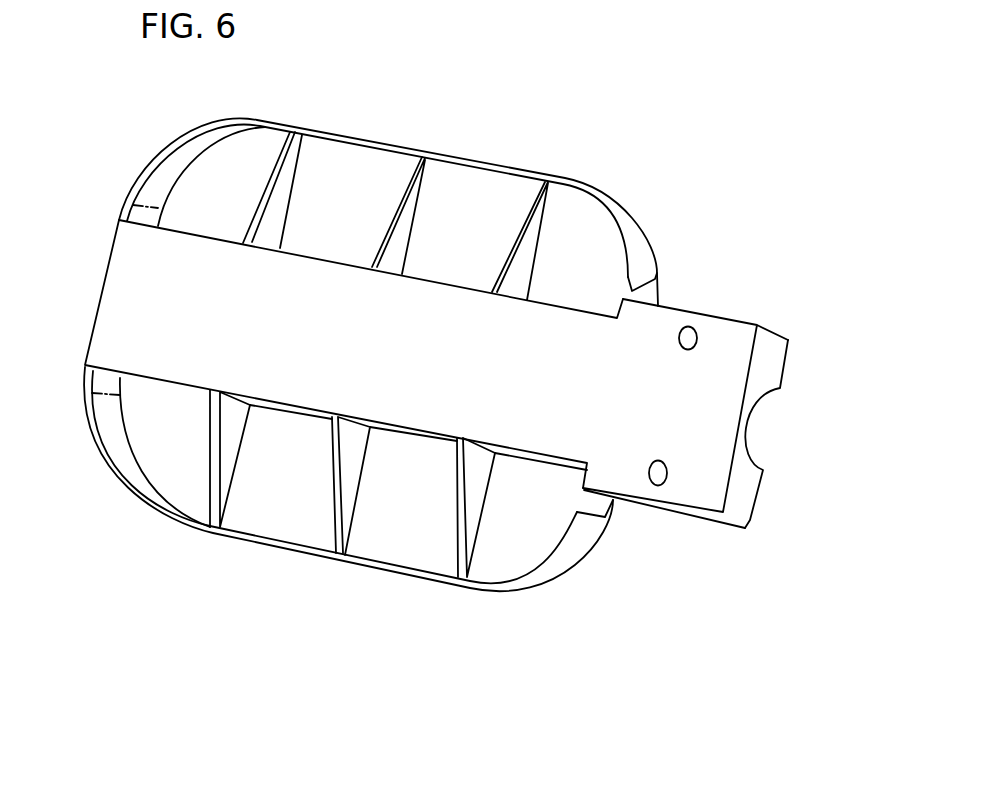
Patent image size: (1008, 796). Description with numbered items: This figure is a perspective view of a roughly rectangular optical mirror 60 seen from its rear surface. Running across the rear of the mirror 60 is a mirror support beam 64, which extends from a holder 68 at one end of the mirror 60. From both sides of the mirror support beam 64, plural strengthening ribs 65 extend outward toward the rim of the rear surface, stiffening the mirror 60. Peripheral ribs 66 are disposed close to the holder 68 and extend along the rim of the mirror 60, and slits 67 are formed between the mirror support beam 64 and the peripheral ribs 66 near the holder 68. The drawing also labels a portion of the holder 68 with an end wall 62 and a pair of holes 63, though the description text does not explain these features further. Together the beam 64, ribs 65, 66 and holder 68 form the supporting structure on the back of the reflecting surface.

The mirror 60 is at (668, 88).
The end wall with notch 62 is at (763, 428).
The mounting holes 63 is at (694, 329).
The mirror support beam 64 is at (140, 295).
The strengthening ribs 65 is at (458, 520).
The peripheral ribs 66 is at (647, 252).
The slits 67 is at (640, 290).
The holder 68 is at (702, 392).